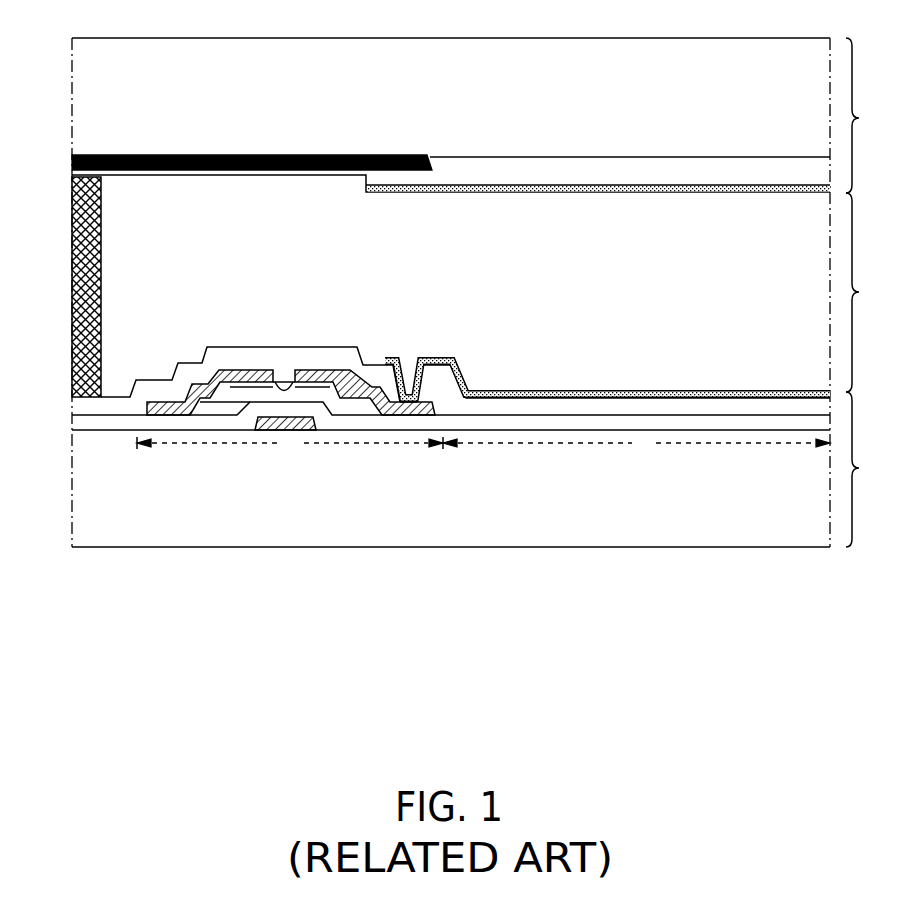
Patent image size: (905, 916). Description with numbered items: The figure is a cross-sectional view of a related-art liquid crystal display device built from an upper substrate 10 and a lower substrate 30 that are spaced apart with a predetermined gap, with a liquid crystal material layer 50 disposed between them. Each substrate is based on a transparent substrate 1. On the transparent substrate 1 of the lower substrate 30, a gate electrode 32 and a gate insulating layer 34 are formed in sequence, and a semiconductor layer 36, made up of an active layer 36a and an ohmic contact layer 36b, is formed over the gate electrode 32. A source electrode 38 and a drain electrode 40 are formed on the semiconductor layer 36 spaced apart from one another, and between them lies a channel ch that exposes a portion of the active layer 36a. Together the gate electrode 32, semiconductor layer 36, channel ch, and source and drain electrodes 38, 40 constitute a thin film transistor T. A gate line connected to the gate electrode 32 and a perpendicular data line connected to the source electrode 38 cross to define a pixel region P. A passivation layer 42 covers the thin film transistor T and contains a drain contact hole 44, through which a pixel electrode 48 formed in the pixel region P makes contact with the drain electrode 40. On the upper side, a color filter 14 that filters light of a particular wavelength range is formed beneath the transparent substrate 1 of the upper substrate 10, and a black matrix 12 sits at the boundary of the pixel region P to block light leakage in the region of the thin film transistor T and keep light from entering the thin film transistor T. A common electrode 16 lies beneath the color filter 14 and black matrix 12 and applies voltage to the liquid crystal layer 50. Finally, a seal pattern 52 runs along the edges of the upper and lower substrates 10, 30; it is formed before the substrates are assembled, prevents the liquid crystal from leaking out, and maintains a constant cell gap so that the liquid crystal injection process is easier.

The transparent substrate 1 is at (483, 110).
The upper substrate 10 is at (482, 115).
The black matrix 12 is at (303, 153).
The color filter 14 is at (598, 168).
The common electrode 16 is at (552, 193).
The lower substrate 30 is at (485, 469).
The gate electrode 32 is at (313, 423).
The gate insulating layer 34 is at (392, 423).
The semiconductor layer 36 is at (249, 461).
The active layer 36a is at (210, 400).
The ohmic contact layer 36b is at (227, 400).
The source electrode 38 is at (250, 368).
The drain electrode 40 is at (320, 368).
The passivation layer 42 is at (356, 350).
The drain contact hole 44 is at (410, 341).
The pixel electrode 48 is at (671, 390).
The liquid crystal material layer 50 is at (872, 292).
The seal pattern 52 is at (72, 273).
The channel ch is at (289, 378).
The thin film transistor T is at (290, 445).
The pixel region P is at (636, 445).